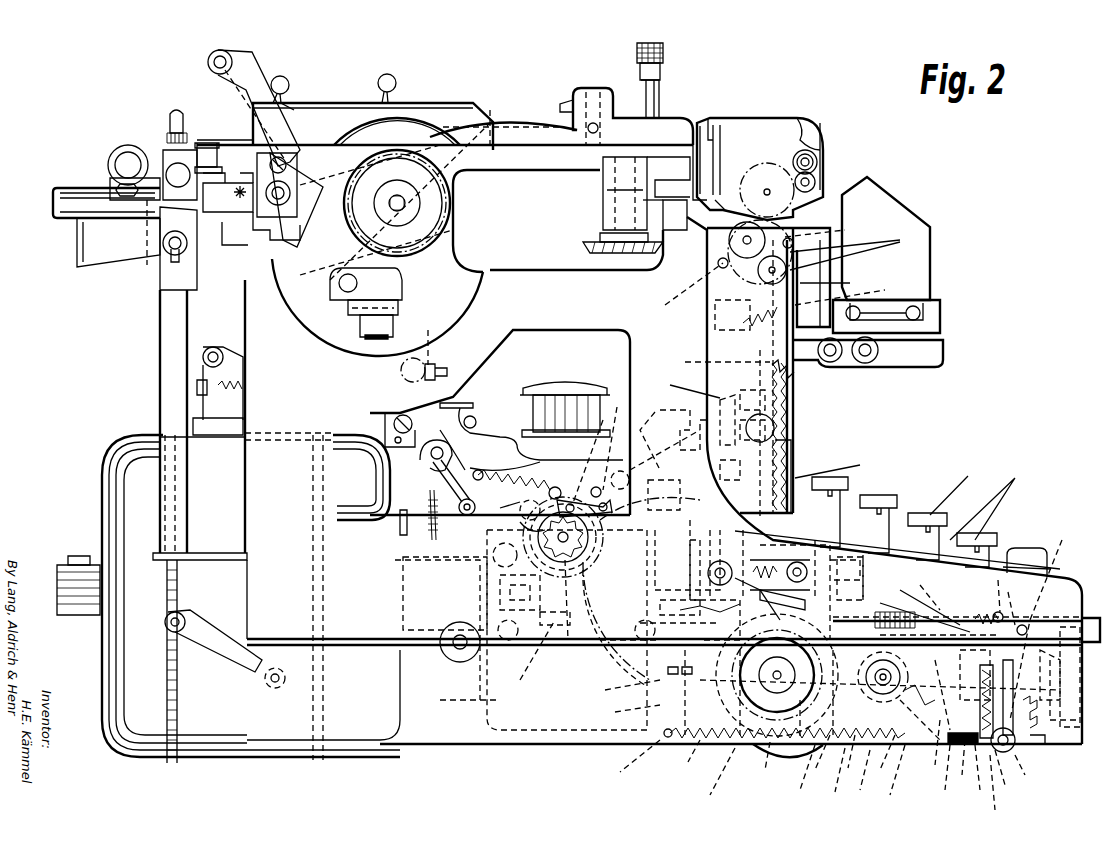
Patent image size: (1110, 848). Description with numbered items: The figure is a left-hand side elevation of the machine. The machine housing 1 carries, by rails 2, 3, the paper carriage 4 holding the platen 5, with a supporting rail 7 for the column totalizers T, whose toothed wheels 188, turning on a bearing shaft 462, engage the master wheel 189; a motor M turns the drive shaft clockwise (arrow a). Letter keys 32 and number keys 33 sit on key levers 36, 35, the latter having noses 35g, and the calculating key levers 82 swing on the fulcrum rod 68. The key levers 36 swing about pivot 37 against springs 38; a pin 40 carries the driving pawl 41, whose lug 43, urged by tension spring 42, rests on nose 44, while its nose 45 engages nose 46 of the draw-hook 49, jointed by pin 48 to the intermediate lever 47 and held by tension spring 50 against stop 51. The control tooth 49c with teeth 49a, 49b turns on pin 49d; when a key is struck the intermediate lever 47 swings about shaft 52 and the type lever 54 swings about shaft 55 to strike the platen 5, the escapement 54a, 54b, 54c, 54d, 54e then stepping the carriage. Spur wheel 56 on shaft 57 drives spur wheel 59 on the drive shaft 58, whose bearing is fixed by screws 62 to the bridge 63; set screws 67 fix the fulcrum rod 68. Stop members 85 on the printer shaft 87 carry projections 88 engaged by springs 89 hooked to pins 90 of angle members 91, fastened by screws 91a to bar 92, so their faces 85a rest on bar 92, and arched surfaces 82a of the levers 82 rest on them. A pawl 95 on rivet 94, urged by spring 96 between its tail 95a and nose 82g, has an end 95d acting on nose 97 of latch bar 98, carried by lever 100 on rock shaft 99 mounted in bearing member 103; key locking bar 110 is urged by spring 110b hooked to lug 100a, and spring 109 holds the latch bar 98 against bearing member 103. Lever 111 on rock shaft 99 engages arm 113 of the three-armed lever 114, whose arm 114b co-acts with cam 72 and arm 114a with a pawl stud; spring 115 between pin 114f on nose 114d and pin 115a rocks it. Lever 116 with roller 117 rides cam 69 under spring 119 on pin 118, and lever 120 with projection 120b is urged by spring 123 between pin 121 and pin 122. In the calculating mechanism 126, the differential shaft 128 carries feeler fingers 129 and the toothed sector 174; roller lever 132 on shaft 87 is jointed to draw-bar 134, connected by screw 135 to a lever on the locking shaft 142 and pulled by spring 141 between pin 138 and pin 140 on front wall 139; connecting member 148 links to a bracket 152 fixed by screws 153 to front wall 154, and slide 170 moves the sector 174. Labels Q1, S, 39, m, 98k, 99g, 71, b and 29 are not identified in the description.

The machine body 1 is at (478, 280).
The presser bar 2 is at (676, 235).
The lever block 3 is at (241, 212).
The arm 4 is at (565, 138).
The handwheel 5 is at (450, 240).
The bracket 7 is at (708, 140).
The housing T is at (765, 118).
The disc 188 is at (766, 162).
The pivot 462 is at (766, 183).
The lug 189 is at (729, 197).
The rollers 148 is at (800, 222).
The plate Q1(Q2) Q1 is at (875, 205).
The pin 152 is at (829, 229).
The links 153 is at (859, 250).
The housing 147 135 is at (790, 262).
The arm 154 is at (839, 283).
The rod 174 is at (853, 290).
The pin 142 is at (683, 292).
The spring 170 is at (742, 316).
The rod 138 is at (711, 360).
The lever 126 is at (704, 408).
The slide 115 is at (790, 574).
The spring end 141 is at (786, 385).
The bar 134 is at (800, 362).
The spring 128 is at (790, 422).
The guide 129 is at (792, 455).
The link 139 is at (840, 468).
The key 33 is at (842, 508).
The key 140 is at (875, 495).
The keys 32 is at (967, 515).
The switch key S is at (1027, 547).
The rod 97 is at (1041, 623).
The lever 39 is at (675, 439).
The pin 49b is at (596, 453).
The lever 54 is at (498, 425).
The bracket 54a is at (462, 397).
The pin 54b is at (424, 350).
The pivot 54c is at (395, 378).
The shaft 54d is at (240, 420).
The lever 54e is at (222, 385).
The pin 55 is at (463, 423).
The spool 50 is at (540, 500).
The ratchet wheel 49 is at (563, 512).
The spring 47 is at (432, 492).
The pivot 48 is at (454, 487).
The screw 38 is at (428, 520).
The bracket 37 is at (400, 520).
The wheel 52 is at (428, 555).
The pawl 45 is at (520, 508).
The pawl 46 is at (520, 524).
The casing 41 is at (540, 542).
The plate 43 is at (437, 630).
The roller 44 is at (505, 565).
The block 42 is at (506, 592).
The bearing 40 is at (534, 624).
The shaft 49a is at (565, 562).
The arm 49d is at (570, 504).
The pin 51 is at (597, 487).
The roller 49c is at (622, 488).
The point a is at (607, 508).
The gear 35(36) 35 is at (880, 579).
The cam 87 is at (723, 595).
The lever 91 is at (684, 535).
The rod 92 is at (688, 556).
The link 57 is at (690, 575).
The arm 91a is at (659, 605).
The spring 85a is at (694, 604).
The pivot 90 is at (638, 625).
The rod 89 is at (680, 632).
The bracket 88 is at (759, 667).
The roller 82a is at (744, 590).
The lever 85 is at (805, 568).
The block 132 is at (840, 578).
The arm 114a is at (807, 596).
The spring 35g is at (891, 604).
The gear 36 is at (873, 579).
The lever 120 is at (935, 635).
The arm 120b is at (931, 597).
The pin 96 is at (996, 611).
The spring 82g is at (977, 605).
The rod 95a is at (1002, 587).
The lever 95 is at (1010, 601).
The pin 94 is at (1022, 624).
The slide 103 is at (1045, 650).
The rod 95d is at (940, 630).
The roller 68 is at (872, 675).
The axis m is at (888, 670).
The lug 82 is at (966, 642).
The arm 98k is at (1078, 690).
The block 98 is at (1079, 677).
The spring 110 is at (1044, 712).
The spring end 110b is at (1052, 736).
The roller 100(101) 100 is at (1015, 748).
The pin 100a is at (1026, 773).
The spring rod 99 is at (990, 745).
The spring 99g is at (1010, 774).
The pin 109 is at (1002, 787).
The lever 111 is at (987, 774).
The pin 123 is at (962, 765).
The lever 122 is at (942, 774).
The pin 121 is at (932, 750).
The stop 113 is at (948, 702).
The lever 114 is at (917, 725).
The arm 114f is at (886, 759).
The arm 114d is at (886, 775).
The arm 114b is at (821, 758).
The pin 118 is at (852, 758).
The lever 116 is at (837, 776).
The arm 115a is at (711, 776).
The pin 117 is at (803, 775).
The spring 71 is at (745, 742).
The pin 69 is at (765, 762).
The lever 59 is at (691, 758).
The rod 119 is at (629, 763).
The cam wheel 58 is at (777, 685).
The axis b is at (774, 664).
The pin 72 is at (800, 720).
The block 67 is at (683, 662).
The shaft 56 is at (610, 662).
The arm 62 is at (620, 691).
The arm 63 is at (624, 713).
The shaft 29 is at (527, 656).
The motor M is at (135, 470).